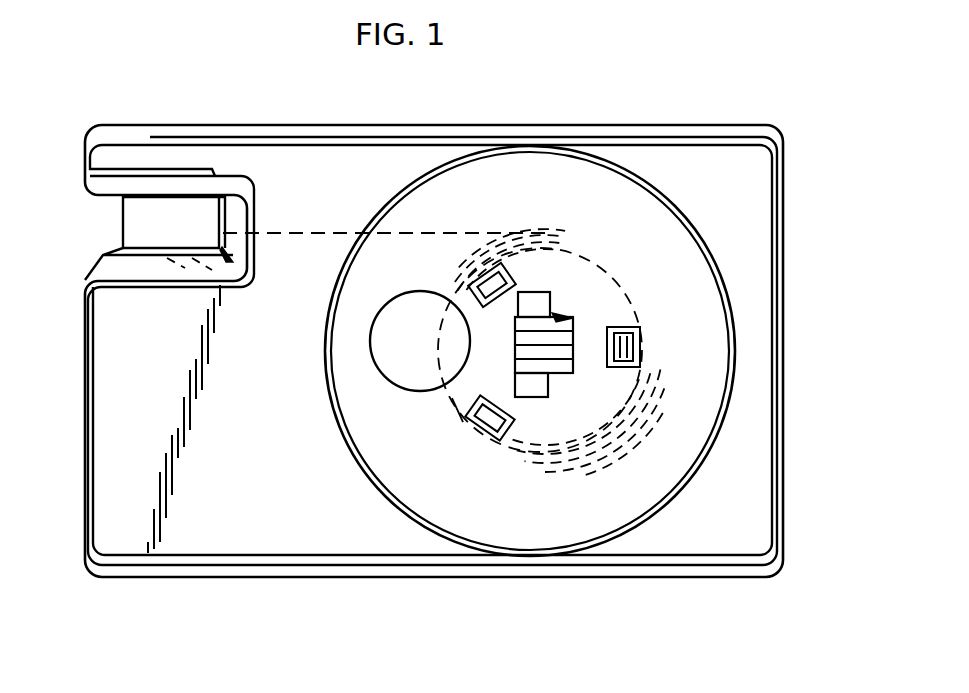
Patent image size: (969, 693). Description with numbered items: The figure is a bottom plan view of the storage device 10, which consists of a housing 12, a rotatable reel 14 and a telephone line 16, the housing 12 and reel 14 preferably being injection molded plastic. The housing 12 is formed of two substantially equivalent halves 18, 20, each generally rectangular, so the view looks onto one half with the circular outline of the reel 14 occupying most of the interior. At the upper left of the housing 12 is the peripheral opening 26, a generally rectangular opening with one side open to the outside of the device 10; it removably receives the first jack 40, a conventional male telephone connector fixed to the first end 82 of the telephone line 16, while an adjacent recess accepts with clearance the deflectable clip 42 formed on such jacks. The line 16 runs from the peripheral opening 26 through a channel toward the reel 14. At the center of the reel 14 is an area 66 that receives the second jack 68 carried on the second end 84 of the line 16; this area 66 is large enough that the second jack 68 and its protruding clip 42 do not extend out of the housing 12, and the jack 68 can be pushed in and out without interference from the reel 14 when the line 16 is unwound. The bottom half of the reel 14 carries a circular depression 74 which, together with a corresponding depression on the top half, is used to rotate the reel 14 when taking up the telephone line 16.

The storage device 10 is at (464, 370).
The housing 12 is at (446, 594).
The rotatable reel 14 is at (672, 465).
The telephone line 16 is at (283, 232).
The housing half 18 is at (747, 243).
The housing half 20 is at (335, 548).
The peripheral opening 26 is at (143, 187).
The first jack 40 is at (133, 212).
The deflectable clip 42 is at (197, 262).
The area 66 is at (560, 318).
The second jack 68 is at (573, 357).
The circular depression 74 is at (394, 375).
The first end 82 is at (238, 266).
The second end 84 is at (507, 347).